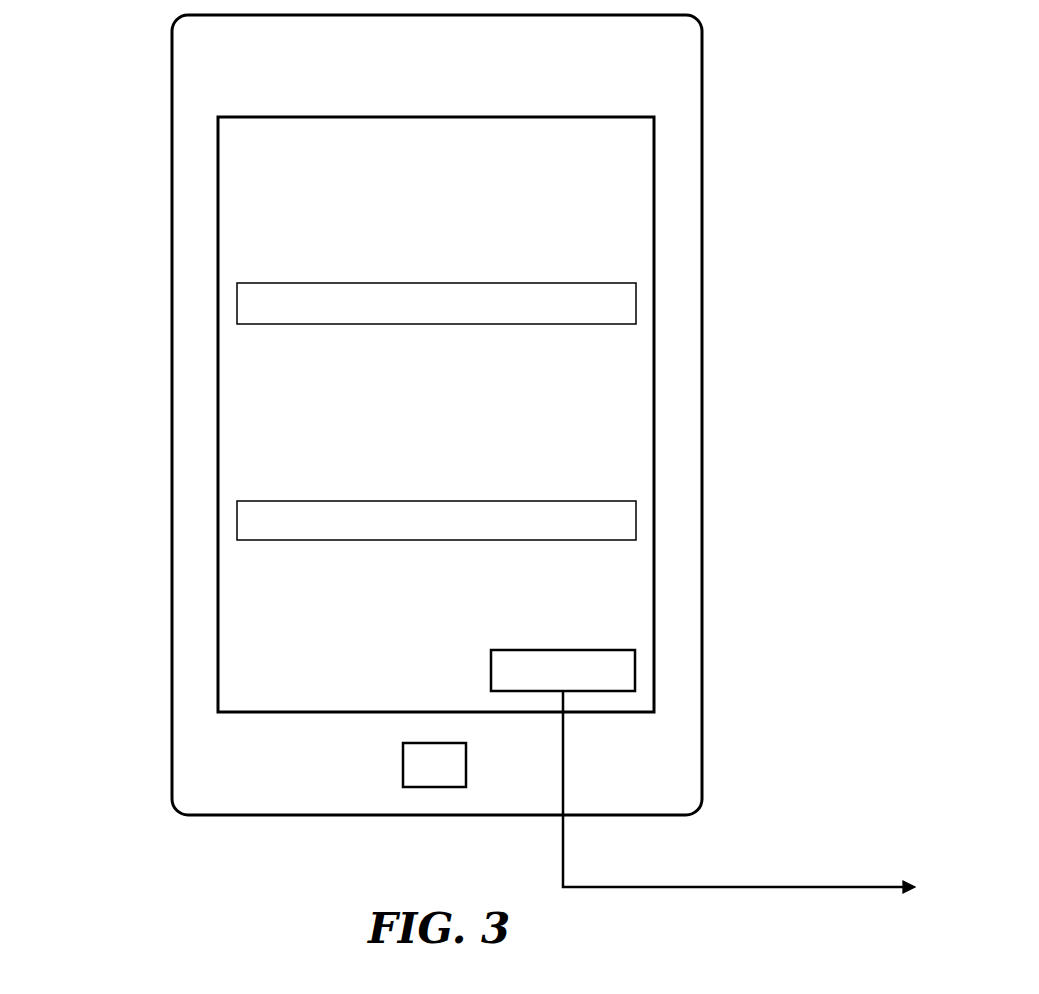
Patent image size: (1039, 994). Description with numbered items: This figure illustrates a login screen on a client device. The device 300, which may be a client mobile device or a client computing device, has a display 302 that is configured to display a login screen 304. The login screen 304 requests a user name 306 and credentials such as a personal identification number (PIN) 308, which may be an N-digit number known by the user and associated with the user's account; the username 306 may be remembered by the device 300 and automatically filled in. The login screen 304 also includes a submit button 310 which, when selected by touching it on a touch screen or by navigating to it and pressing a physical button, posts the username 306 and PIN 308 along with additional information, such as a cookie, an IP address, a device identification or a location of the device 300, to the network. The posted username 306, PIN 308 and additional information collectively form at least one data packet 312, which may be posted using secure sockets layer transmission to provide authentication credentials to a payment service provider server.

The device 300 is at (172, 198).
The display 302 is at (625, 211).
The login screen 304 is at (230, 146).
The user name 306 is at (237, 302).
The personal identification number (PIN) 308 is at (237, 520).
The submit button 310 is at (635, 667).
The data packet 312 is at (725, 820).